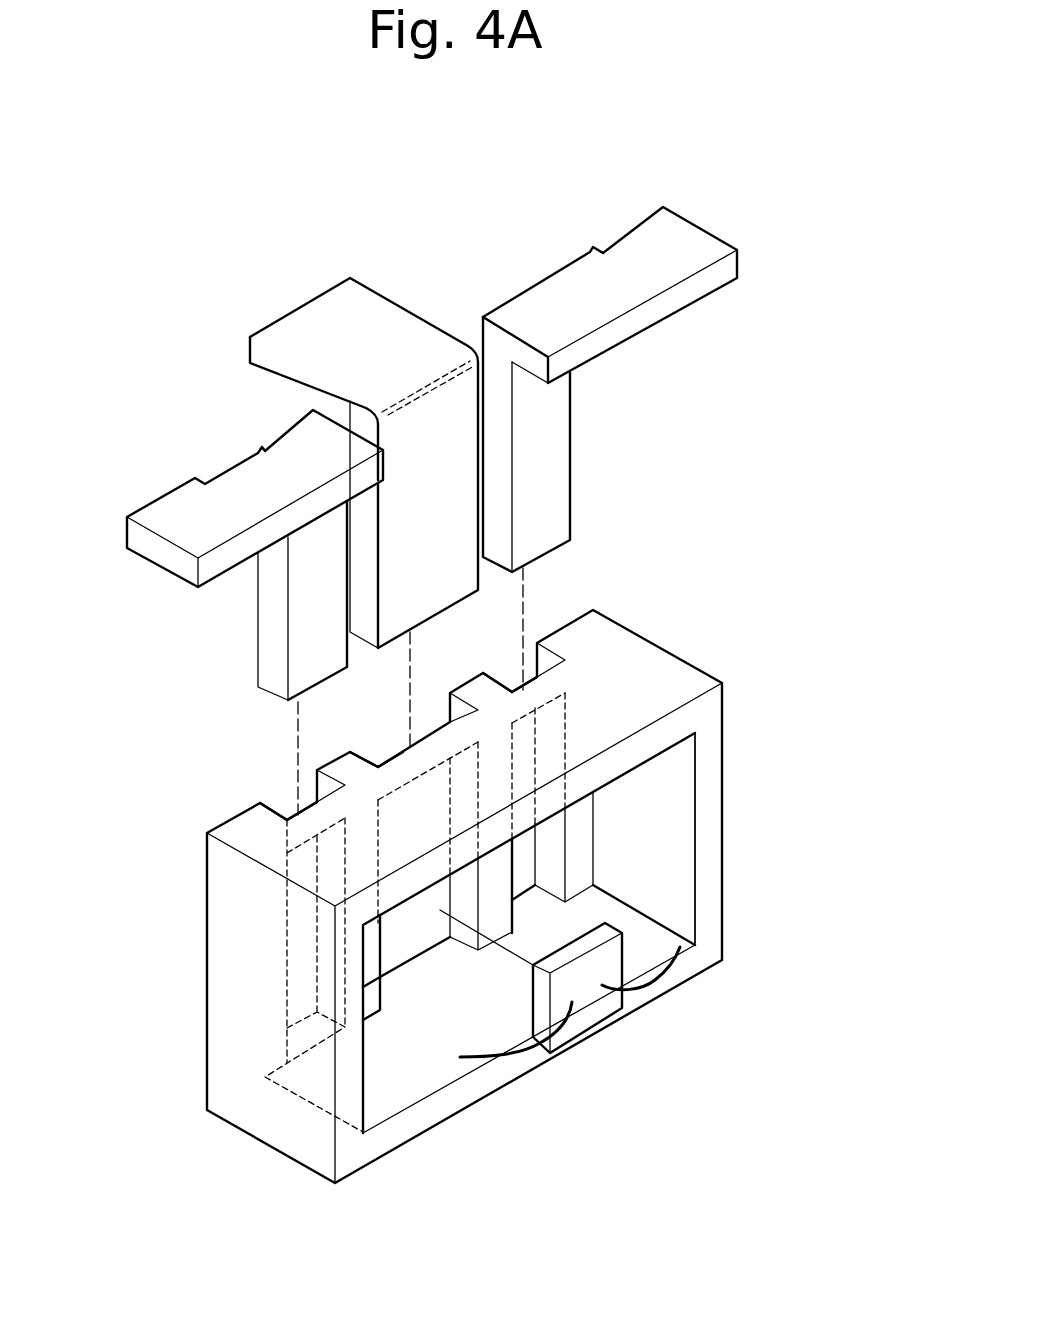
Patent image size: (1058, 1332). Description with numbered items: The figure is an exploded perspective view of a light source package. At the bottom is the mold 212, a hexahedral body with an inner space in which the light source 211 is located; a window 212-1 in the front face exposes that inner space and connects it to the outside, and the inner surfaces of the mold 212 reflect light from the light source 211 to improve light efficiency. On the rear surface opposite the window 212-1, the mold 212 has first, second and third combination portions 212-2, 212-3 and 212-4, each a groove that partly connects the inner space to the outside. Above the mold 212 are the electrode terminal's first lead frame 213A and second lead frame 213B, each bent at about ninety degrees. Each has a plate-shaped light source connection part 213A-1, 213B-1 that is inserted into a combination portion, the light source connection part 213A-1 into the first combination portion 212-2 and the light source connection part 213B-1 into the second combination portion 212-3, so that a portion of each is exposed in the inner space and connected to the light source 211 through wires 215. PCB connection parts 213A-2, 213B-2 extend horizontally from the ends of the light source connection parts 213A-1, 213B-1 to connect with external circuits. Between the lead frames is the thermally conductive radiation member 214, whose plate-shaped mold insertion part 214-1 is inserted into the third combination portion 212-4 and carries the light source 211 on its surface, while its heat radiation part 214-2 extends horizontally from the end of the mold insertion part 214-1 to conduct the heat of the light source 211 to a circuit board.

The radiation member 214 is at (292, 236).
The mold insertion part 214-1 is at (450, 432).
The heat radiation part 214-2 is at (340, 313).
The second lead frame 213B is at (53, 396).
The light source connection part 213B-1 is at (320, 547).
The PCB connection part 213B-2 is at (180, 510).
The first lead frame 213A is at (743, 367).
The light source connection part 213A-1 is at (553, 463).
The PCB connection part 213A-2 is at (590, 348).
The mold 212 is at (343, 1103).
The window 212-1 is at (695, 838).
The first combination portion 212-2 is at (514, 690).
The second combination portion 212-3 is at (283, 806).
The third combination portion 212-4 is at (403, 751).
The wires 215 is at (677, 975).
The light source 211 is at (600, 997).